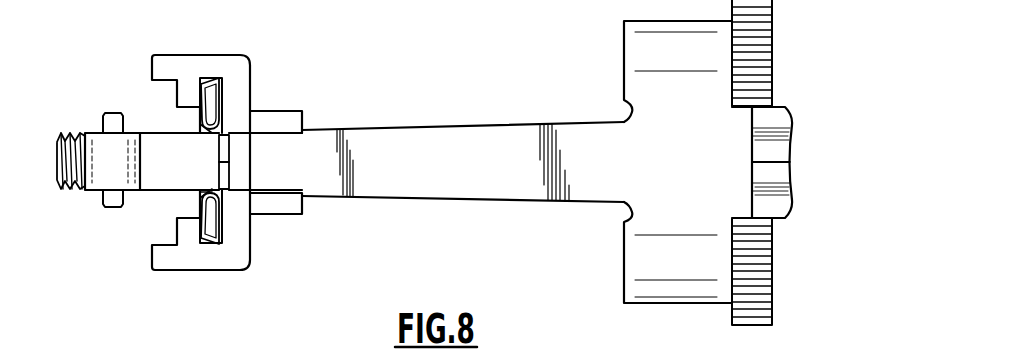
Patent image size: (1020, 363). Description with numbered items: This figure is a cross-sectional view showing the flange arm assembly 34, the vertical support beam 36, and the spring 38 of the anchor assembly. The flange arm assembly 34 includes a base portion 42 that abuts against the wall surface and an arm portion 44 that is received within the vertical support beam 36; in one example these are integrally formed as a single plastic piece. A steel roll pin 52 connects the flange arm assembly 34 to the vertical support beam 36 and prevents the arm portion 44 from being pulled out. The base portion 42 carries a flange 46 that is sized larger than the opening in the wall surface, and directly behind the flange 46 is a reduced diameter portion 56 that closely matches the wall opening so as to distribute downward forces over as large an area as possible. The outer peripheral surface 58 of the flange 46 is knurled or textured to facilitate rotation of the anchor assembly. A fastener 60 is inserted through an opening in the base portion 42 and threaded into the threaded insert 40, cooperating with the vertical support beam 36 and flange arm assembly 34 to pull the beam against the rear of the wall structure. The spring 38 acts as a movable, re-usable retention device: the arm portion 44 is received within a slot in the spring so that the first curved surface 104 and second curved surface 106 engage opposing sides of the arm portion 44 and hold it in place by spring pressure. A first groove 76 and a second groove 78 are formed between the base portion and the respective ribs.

The flange arm assembly 34 is at (482, 240).
The vertical support beam 36 is at (247, 72).
The spring 38 is at (228, 175).
The threaded insert 40 is at (279, 208).
The base portion 42 is at (622, 77).
The arm portion 44 is at (402, 177).
The flange 46 is at (775, 323).
The steel roll pin 52 is at (118, 209).
The reduced diameter portion 56 is at (663, 285).
The outer peripheral surface 58 is at (753, 313).
The fastener 60 is at (780, 178).
The first groove 76 is at (213, 244).
The second groove 78 is at (214, 82).
The first curved surface 104 is at (214, 193).
The second curved surface 106 is at (209, 134).